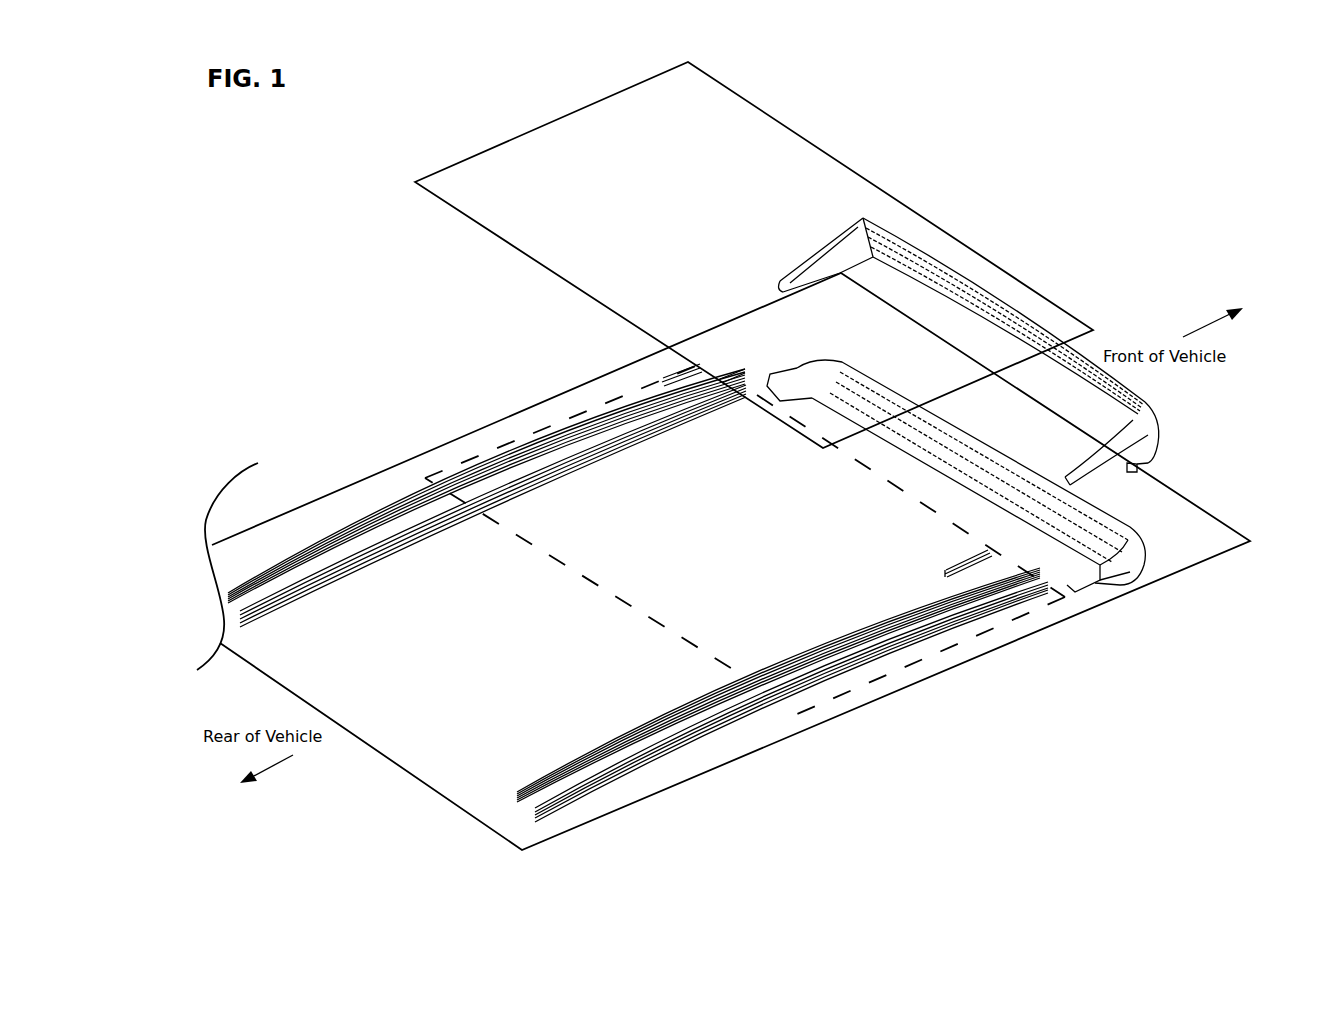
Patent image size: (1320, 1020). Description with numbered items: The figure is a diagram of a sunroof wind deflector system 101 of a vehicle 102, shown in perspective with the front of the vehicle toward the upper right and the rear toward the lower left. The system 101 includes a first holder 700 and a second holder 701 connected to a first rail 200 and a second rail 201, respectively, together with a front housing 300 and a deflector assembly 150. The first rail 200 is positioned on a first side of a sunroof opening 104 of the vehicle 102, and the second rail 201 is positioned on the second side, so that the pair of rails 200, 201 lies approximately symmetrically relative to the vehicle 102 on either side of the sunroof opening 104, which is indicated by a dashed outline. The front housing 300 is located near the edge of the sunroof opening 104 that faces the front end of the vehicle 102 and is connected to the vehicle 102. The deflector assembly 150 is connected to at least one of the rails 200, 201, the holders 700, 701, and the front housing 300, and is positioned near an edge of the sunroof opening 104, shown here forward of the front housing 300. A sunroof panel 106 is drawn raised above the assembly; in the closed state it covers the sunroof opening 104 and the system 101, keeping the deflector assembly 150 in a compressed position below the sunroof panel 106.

The sunroof wind deflector system 101 is at (1203, 101).
The vehicle 102 is at (1180, 573).
The sunroof opening 104 is at (423, 480).
The sunroof panel 106 is at (760, 110).
The deflector assembly 150 is at (975, 262).
The first rail 200 is at (690, 750).
The second rail 201 is at (397, 558).
The front housing 300 is at (903, 433).
The first holder 700 is at (940, 573).
The second holder 701 is at (700, 362).